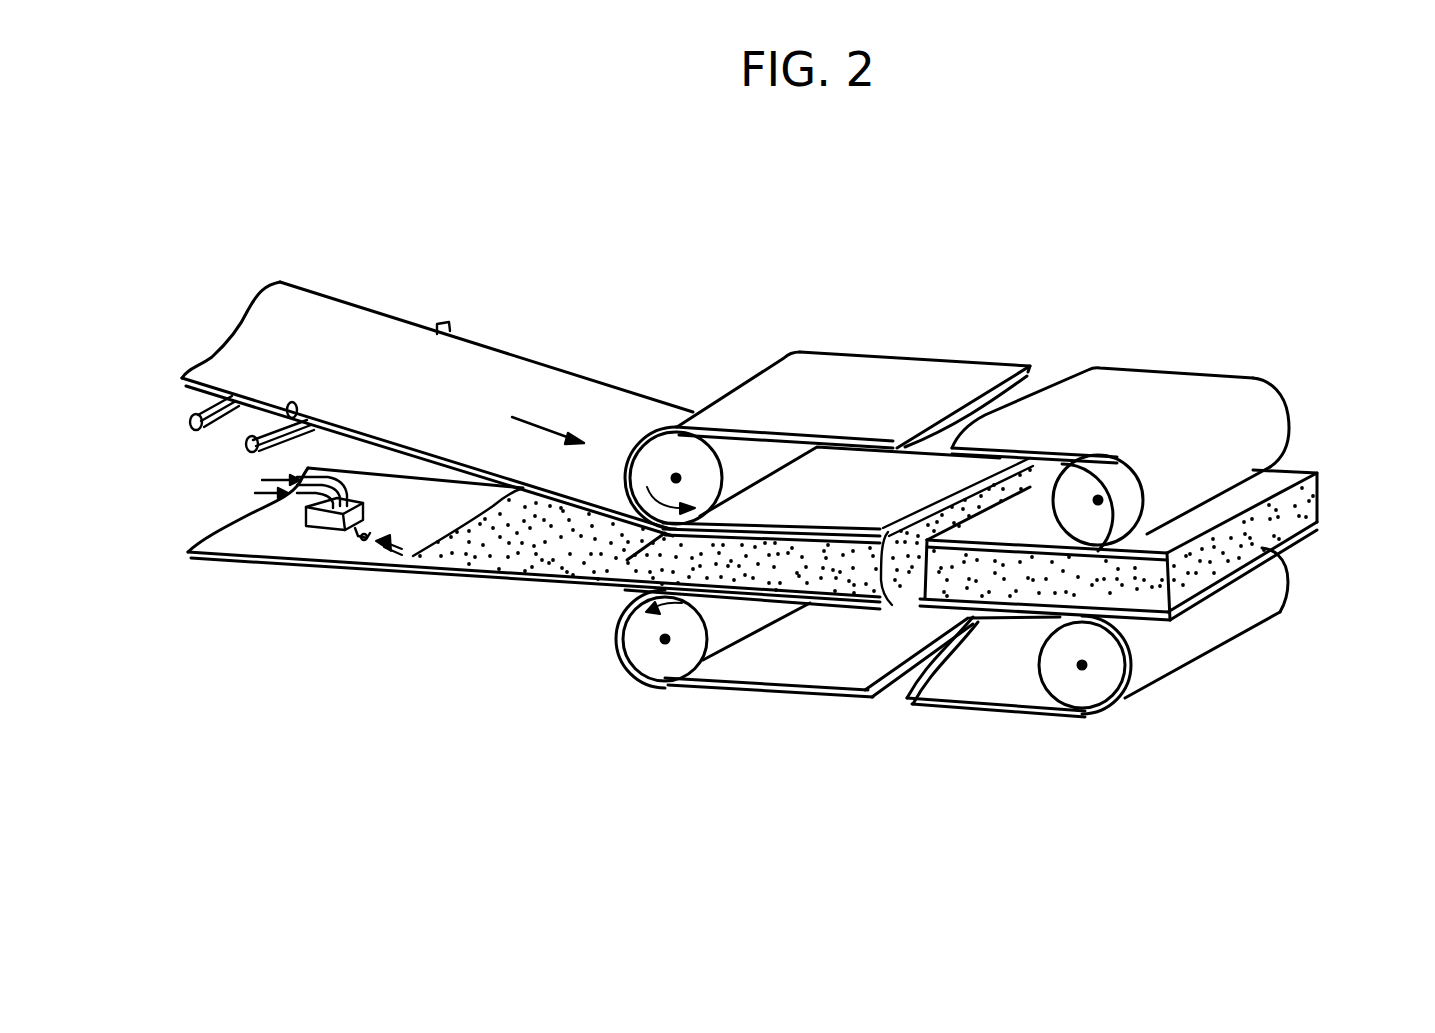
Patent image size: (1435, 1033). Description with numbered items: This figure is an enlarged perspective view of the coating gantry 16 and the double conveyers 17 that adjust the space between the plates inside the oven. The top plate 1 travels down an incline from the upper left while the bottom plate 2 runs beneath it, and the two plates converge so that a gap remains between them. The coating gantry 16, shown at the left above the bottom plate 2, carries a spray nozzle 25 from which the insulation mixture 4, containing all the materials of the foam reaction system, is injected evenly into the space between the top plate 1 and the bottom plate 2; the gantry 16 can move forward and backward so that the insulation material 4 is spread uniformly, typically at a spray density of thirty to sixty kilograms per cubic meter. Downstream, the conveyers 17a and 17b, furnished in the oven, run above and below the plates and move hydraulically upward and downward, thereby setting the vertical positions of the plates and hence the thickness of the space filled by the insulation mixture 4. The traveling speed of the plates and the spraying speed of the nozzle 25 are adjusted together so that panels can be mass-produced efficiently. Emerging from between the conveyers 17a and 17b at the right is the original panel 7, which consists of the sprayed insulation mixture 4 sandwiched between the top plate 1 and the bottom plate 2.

The top plate 1 is at (507, 370).
The bottom plate 2 is at (380, 560).
The insulation mixture 4 is at (833, 577).
The original panel 7 is at (1250, 502).
The coating gantry 16 is at (296, 530).
The conveyers 17 is at (1150, 397).
The conveyer 17a is at (842, 373).
The conveyer 17b is at (1068, 683).
The spray nozzle 25 is at (345, 536).